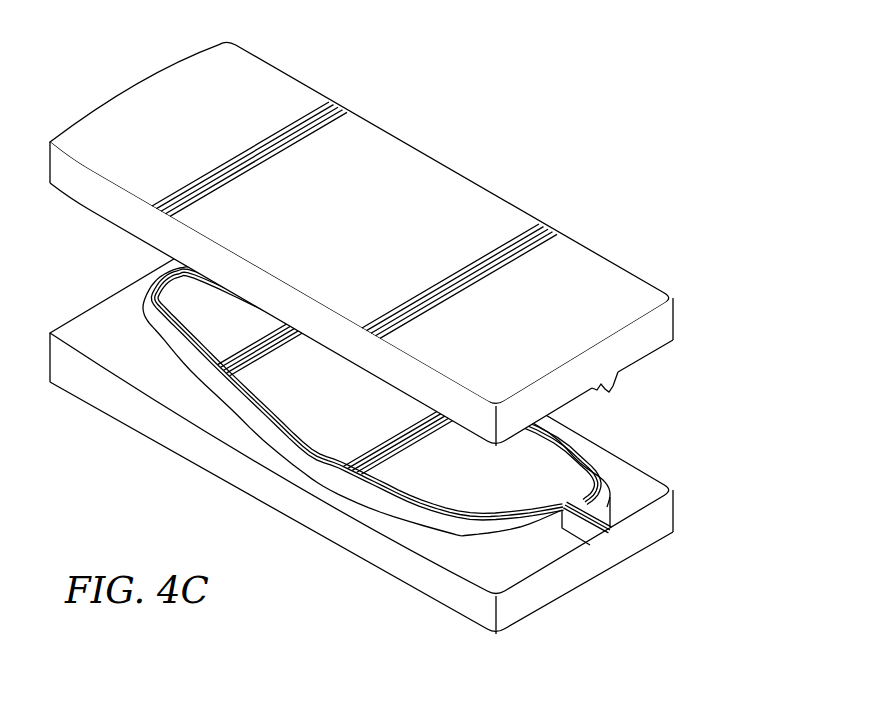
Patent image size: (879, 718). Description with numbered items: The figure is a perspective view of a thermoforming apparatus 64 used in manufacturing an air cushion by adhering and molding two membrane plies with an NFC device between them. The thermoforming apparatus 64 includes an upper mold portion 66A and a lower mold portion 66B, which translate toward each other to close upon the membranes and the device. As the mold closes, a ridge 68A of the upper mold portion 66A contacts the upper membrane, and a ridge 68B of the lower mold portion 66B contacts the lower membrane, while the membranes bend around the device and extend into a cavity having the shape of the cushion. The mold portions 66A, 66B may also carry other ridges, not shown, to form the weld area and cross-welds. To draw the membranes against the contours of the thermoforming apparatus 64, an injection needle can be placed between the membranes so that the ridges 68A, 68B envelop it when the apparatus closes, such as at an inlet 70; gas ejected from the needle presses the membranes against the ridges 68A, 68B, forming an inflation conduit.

The thermoforming apparatus 64 is at (476, 161).
The upper mold portion 66A is at (129, 86).
The lower mold portion 66B is at (122, 426).
The ridge 68A is at (615, 391).
The ridge 68B is at (585, 456).
The inlet 70 is at (613, 530).